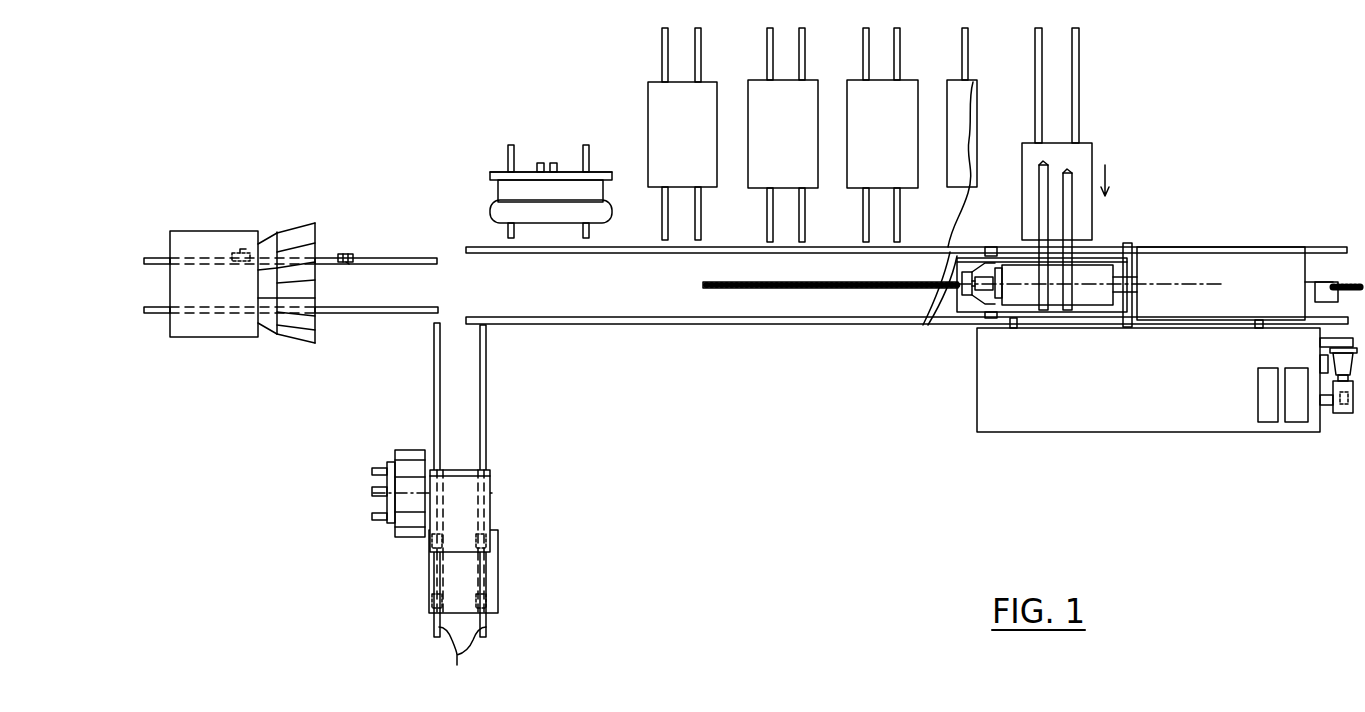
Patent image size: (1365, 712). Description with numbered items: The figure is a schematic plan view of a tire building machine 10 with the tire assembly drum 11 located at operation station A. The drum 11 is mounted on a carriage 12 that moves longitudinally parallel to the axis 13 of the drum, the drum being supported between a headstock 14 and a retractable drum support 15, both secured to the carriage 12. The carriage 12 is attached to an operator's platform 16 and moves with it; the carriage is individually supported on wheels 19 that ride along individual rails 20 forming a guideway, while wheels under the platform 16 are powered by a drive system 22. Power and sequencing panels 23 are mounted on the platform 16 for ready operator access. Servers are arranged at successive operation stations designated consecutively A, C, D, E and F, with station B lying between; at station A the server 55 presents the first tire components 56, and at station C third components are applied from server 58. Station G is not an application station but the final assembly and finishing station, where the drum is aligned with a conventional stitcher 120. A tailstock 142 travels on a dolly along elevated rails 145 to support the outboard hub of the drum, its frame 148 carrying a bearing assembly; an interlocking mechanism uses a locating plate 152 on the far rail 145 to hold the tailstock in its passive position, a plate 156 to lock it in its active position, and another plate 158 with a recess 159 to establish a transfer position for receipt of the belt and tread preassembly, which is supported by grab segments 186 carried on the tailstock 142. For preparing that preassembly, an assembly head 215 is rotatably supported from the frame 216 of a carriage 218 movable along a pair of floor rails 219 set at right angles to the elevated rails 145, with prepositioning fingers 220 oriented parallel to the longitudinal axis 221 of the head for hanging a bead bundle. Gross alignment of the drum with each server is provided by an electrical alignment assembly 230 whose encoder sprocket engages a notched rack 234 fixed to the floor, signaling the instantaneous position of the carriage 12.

The tire building machine 10 is at (304, 96).
The tire assembly drum 11 is at (1027, 295).
The carriage 12 is at (969, 331).
The axis 13 is at (1203, 284).
The headstock 14 is at (1181, 235).
The retractable drum support 15 is at (963, 290).
The operator's platform 16 is at (1048, 430).
The wheels 19 is at (993, 245).
The rails 20 is at (602, 249).
The drive system 22 is at (1342, 432).
The power and sequencing panels 23 is at (1293, 415).
The server 55 is at (1088, 215).
The first tire components 56 is at (1067, 186).
The server 58 is at (956, 120).
The stitcher 120 is at (495, 162).
The tailstock 142 is at (230, 350).
The elevated rails 145 is at (349, 314).
The frame 148 is at (193, 232).
The locating plate 152 is at (239, 251).
The plate 156 is at (936, 263).
The plate 158 is at (348, 256).
The recess 159 is at (347, 263).
The grab segments 186 is at (297, 235).
The assembly head 215 is at (410, 450).
The frame 216 is at (470, 507).
The carriage 218 is at (495, 580).
The rails 219 is at (462, 659).
The prepositioning fingers 220 is at (372, 498).
The longitudinal axis 221 is at (491, 490).
The electrical alignment assembly 230 is at (1341, 260).
The notched rack 234 is at (797, 290).
The operation station A is at (1098, 148).
The operation station C is at (957, 64).
The operation station D is at (913, 78).
The operation station E is at (819, 70).
The operation station F is at (718, 67).
The operation station G is at (606, 133).